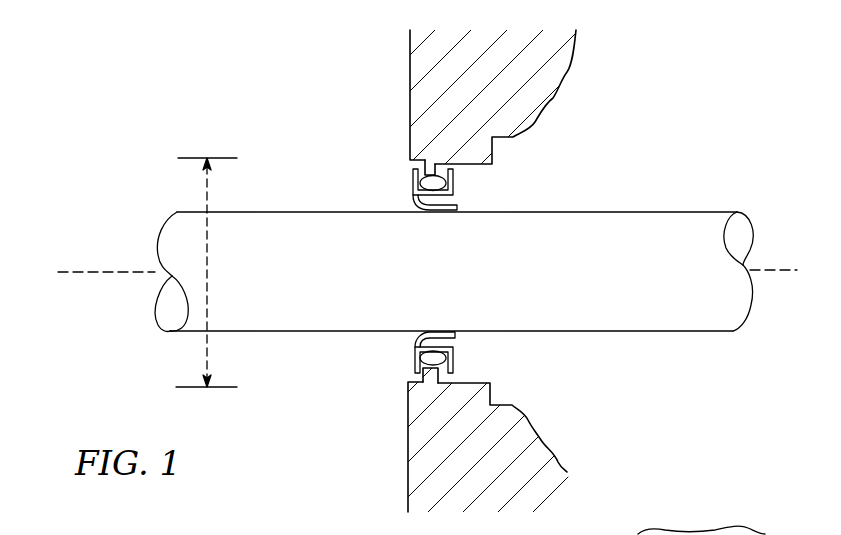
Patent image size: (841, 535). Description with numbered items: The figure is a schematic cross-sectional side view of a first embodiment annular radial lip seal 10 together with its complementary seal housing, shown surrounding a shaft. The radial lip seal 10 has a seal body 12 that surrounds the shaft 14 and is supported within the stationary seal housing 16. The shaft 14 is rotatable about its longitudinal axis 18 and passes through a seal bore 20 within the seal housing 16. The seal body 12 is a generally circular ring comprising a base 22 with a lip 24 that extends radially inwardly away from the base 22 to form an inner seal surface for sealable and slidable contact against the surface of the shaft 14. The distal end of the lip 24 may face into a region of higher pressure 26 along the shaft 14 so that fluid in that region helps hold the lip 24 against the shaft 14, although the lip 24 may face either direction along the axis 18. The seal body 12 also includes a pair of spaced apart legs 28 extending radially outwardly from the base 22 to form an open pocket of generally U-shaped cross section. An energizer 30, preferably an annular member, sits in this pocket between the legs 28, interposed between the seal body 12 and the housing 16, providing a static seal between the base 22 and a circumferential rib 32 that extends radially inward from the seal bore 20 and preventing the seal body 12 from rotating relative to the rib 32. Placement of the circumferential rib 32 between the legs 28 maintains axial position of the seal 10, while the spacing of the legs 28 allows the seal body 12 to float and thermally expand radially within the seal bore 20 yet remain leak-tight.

The radial lip seal 10 is at (344, 129).
The seal body 12 is at (411, 360).
The shaft 14 is at (650, 331).
The seal housing 16 is at (410, 93).
The longitudinal axis 18 is at (98, 273).
The seal bore 20 is at (206, 199).
The base 22 is at (415, 193).
The lip 24 is at (457, 203).
The region of higher pressure 26 is at (657, 191).
The legs 28 is at (415, 181).
The energizer 30 is at (424, 172).
The circumferential rib 32 is at (475, 165).